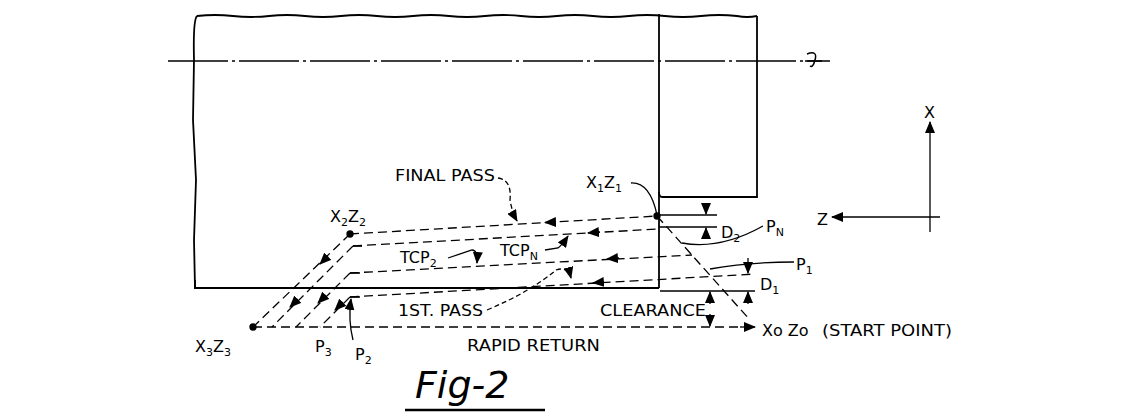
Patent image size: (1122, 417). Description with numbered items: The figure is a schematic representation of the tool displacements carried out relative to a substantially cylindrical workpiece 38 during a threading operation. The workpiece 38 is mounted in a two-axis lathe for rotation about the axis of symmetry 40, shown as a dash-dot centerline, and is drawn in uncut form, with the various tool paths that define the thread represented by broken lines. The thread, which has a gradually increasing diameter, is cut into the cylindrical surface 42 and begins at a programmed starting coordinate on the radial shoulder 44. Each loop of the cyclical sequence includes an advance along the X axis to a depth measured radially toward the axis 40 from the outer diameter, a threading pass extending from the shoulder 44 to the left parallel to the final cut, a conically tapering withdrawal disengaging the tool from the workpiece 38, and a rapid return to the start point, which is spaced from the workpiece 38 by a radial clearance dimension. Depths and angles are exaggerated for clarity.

The cylindrical workpiece 38 is at (758, 103).
The axis of symmetry 40 is at (180, 61).
The cylindrical surface 42 is at (218, 288).
The radial shoulder 44 is at (661, 194).